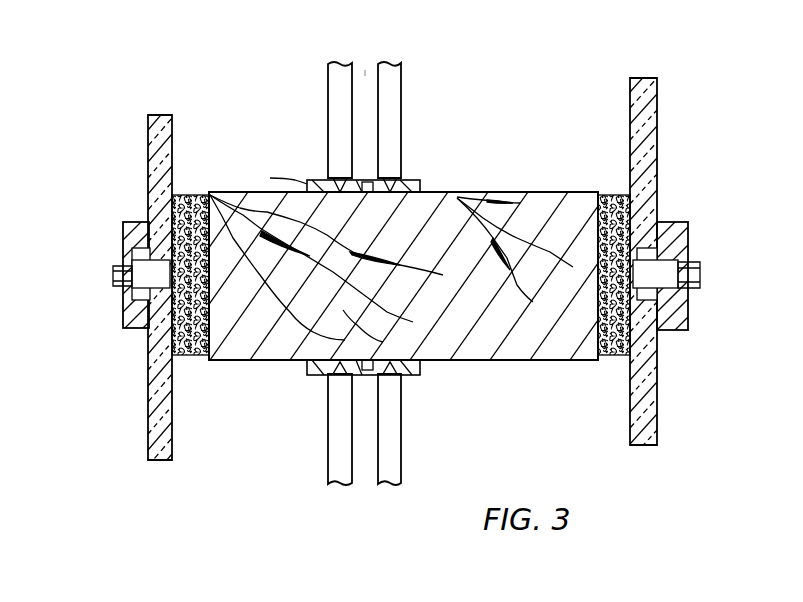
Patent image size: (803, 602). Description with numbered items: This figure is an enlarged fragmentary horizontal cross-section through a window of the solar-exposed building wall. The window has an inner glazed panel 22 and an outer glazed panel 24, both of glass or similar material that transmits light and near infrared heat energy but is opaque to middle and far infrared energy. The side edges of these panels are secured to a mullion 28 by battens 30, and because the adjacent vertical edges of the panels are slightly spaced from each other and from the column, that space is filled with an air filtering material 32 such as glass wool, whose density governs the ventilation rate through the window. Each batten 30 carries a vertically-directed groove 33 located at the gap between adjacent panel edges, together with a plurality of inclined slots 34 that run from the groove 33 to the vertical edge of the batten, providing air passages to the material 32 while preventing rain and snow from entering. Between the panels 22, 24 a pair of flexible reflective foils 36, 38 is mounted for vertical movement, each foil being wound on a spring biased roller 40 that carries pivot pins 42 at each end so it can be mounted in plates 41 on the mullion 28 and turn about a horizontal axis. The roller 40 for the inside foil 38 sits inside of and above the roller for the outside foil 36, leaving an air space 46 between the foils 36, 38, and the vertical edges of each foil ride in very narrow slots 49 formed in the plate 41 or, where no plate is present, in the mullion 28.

The inner glazed panel 22 is at (657, 152).
The outer glazed panel 24 is at (148, 135).
The mullion 28 is at (562, 170).
The batten 30 is at (123, 232).
The air filtering material 32 is at (190, 355).
The vertically-directed groove 33 is at (142, 282).
The slots 34 is at (140, 262).
The outside foil 36 is at (345, 92).
The inside foil 38 is at (390, 92).
The spring biased roller 40 is at (338, 62).
The plate 41 is at (277, 171).
The pivot pins 42 is at (330, 180).
The air space 46 is at (365, 76).
The slots 49 is at (368, 180).